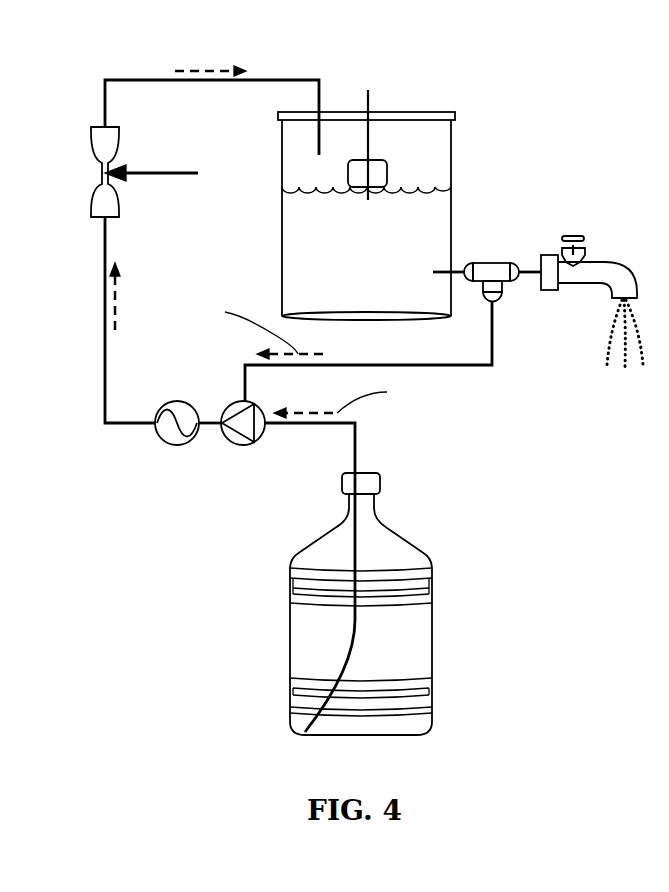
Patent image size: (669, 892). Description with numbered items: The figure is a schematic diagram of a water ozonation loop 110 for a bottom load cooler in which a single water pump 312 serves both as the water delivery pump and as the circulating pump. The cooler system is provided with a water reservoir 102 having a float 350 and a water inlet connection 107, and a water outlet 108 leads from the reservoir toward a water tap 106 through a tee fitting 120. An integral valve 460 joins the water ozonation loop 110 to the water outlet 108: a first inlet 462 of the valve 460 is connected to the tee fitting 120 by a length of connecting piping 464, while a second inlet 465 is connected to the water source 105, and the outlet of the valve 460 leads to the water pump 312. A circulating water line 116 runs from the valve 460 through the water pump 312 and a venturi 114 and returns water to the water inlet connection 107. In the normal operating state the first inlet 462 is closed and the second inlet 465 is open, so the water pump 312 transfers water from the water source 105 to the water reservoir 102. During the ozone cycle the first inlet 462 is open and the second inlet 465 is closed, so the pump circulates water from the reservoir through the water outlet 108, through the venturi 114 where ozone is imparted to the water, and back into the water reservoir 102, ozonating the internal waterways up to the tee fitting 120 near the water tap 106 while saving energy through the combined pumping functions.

The water reservoir 102 is at (470, 134).
The water source 105 is at (397, 533).
The water tap 106 is at (593, 262).
The water inlet connection 107 is at (319, 80).
The water outlet 108 is at (532, 268).
The water ozonation loop 110 is at (140, 434).
The venturi 114 is at (108, 140).
The circulating water line 116 is at (107, 338).
The tee fitting 120 is at (500, 276).
The water pump 312 is at (190, 405).
The float 350 is at (368, 158).
The integral valve 460 is at (243, 426).
The first inlet 462 is at (229, 395).
The connecting piping 464 is at (430, 363).
The second inlet 465 is at (272, 430).